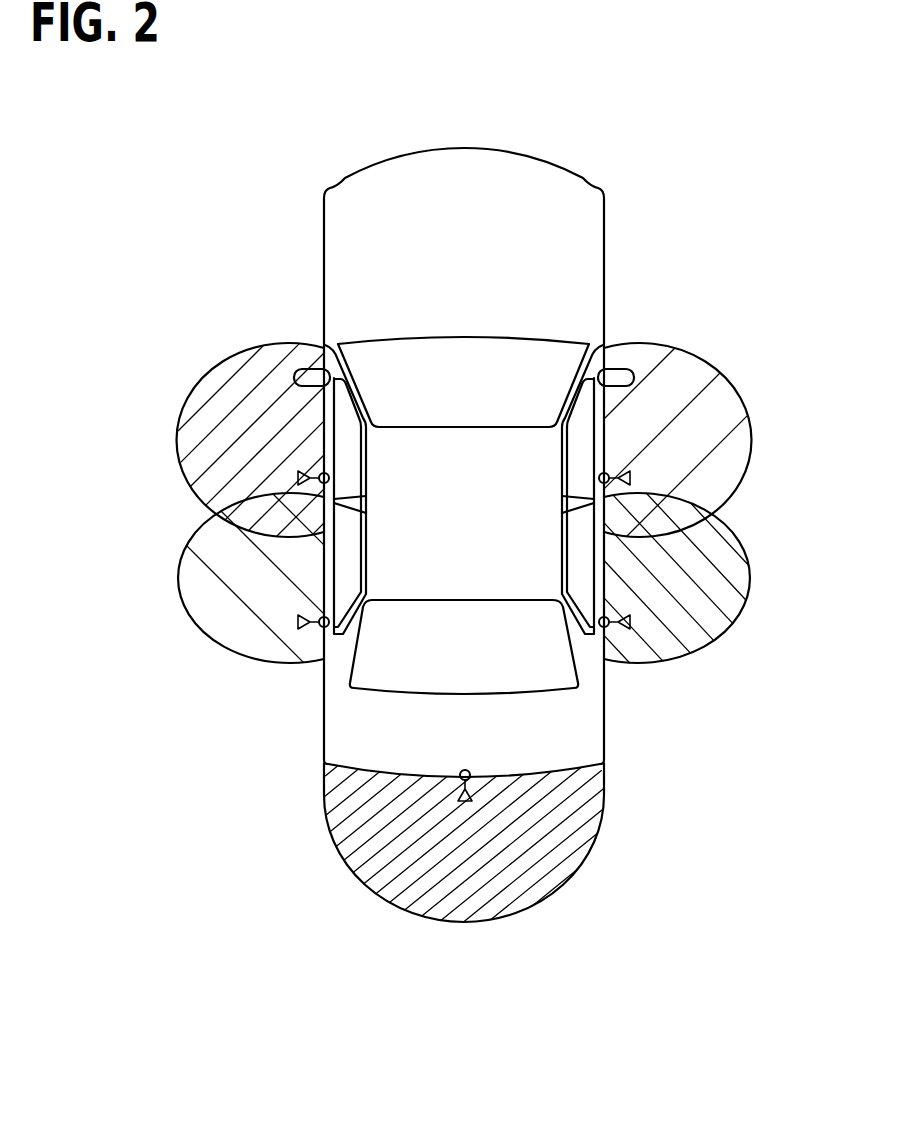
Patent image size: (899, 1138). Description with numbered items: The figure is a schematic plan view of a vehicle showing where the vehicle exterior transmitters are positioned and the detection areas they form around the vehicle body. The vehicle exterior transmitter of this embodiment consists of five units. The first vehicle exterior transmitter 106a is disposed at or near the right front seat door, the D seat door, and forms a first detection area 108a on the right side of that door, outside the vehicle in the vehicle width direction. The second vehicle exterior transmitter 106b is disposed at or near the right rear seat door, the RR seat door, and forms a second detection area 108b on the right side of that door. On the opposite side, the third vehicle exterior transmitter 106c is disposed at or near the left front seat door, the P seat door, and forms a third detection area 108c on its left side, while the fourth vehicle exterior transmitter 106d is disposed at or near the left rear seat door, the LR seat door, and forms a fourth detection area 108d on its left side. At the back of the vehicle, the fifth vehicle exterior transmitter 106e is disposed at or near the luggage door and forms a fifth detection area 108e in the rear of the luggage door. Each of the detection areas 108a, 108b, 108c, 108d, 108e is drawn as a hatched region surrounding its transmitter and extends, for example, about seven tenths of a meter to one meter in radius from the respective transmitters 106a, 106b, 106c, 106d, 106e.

The first vehicle exterior transmitter 106a is at (608, 475).
The second vehicle exterior transmitter 106b is at (609, 625).
The third vehicle exterior transmitter 106c is at (320, 474).
The fourth vehicle exterior transmitter 106d is at (319, 626).
The fifth vehicle exterior transmitter 106e is at (471, 773).
The first detection area 108a is at (698, 360).
The second detection area 108b is at (733, 537).
The third detection area 108c is at (236, 357).
The fourth detection area 108d is at (193, 541).
The fifth detection area 108e is at (559, 889).